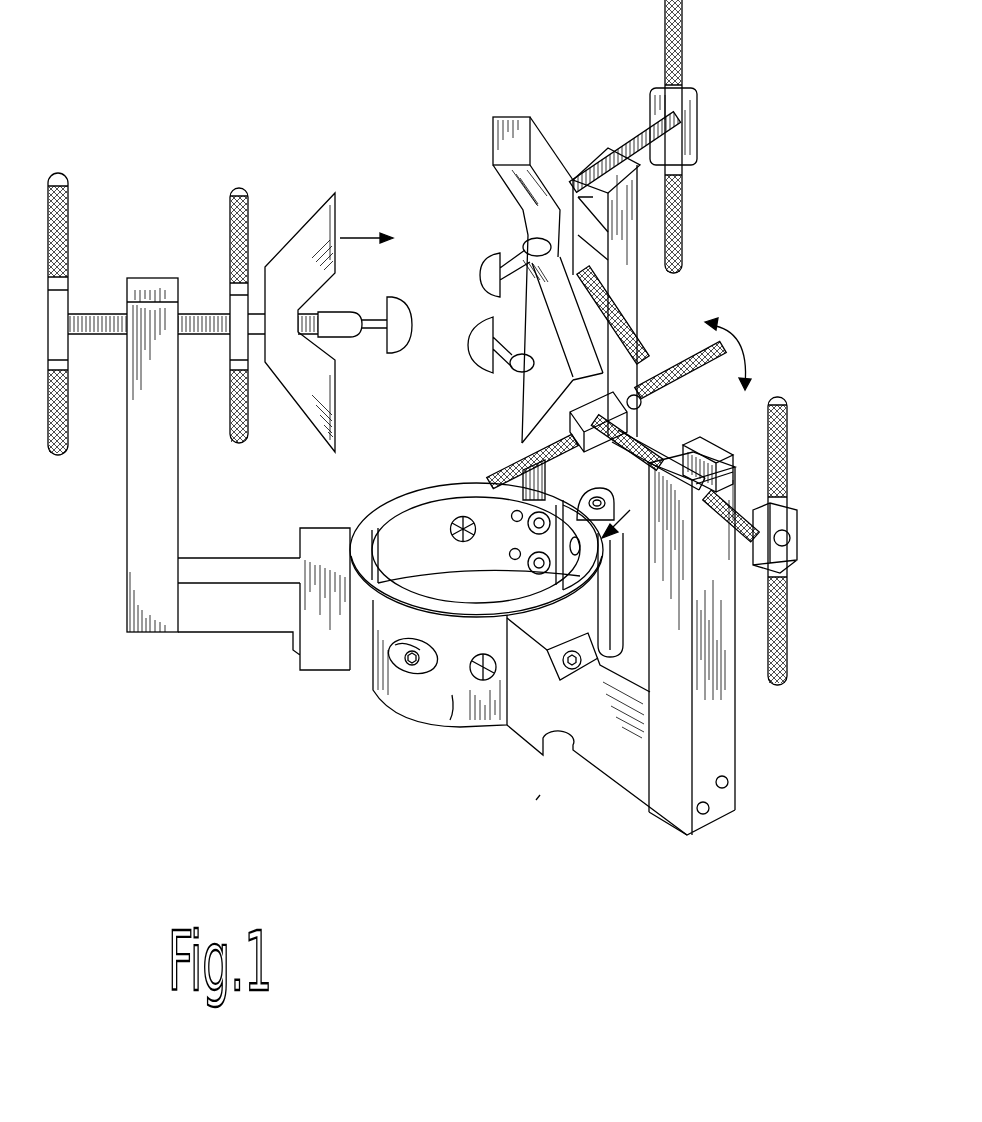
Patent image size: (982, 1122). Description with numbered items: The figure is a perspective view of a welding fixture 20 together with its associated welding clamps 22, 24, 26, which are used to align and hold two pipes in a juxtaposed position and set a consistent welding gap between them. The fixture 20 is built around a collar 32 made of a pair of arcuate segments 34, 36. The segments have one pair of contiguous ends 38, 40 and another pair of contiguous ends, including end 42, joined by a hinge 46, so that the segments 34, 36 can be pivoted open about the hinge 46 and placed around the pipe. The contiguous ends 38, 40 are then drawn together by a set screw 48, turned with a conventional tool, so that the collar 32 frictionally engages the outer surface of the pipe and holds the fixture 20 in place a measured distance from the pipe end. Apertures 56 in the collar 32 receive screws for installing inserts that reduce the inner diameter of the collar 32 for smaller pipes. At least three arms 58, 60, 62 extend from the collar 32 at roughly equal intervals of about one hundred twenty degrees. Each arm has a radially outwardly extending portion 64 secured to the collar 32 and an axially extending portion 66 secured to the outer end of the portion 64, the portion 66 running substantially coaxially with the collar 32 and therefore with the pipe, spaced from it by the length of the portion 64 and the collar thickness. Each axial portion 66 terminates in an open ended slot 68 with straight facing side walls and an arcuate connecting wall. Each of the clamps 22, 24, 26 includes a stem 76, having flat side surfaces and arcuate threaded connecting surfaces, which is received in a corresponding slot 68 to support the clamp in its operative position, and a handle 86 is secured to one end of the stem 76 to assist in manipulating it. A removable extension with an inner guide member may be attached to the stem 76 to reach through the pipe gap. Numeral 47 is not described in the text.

The welding fixture 20 is at (535, 802).
The welding clamp 22 is at (815, 520).
The welding clamp 24 is at (712, 92).
The welding clamp 26 is at (143, 238).
The collar 32 is at (421, 705).
The arcuate segment 34 is at (428, 522).
The arcuate segment 36 is at (452, 695).
The contiguous end 38 is at (370, 563).
The contiguous end 40 is at (392, 662).
The contiguous end 42 is at (550, 460).
The hinge 46 is at (648, 431).
The clamp tab 47 is at (580, 573).
The set screw 48 is at (407, 666).
The aperture 56 is at (463, 517).
The arm 58 is at (726, 826).
The arm 60 is at (155, 642).
The arm 62 is at (708, 290).
The radially outwardly extending portion 64 is at (613, 753).
The axially extending portion 66 is at (710, 723).
The open ended slot 68 is at (720, 452).
The stem 76 is at (743, 540).
The handle 86 is at (790, 428).